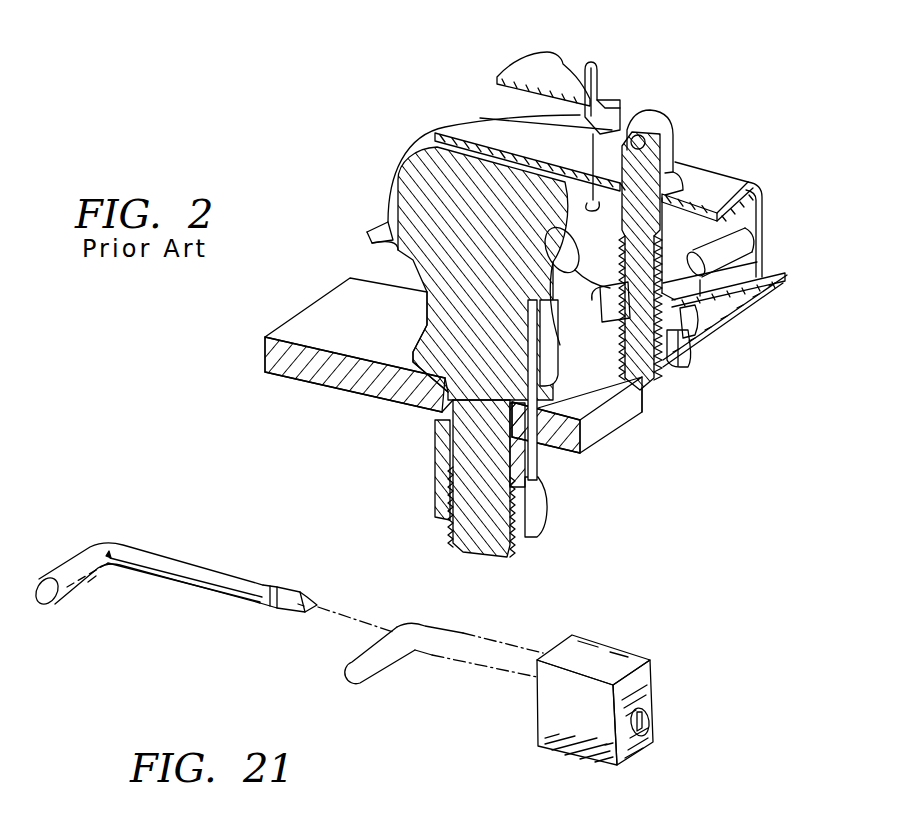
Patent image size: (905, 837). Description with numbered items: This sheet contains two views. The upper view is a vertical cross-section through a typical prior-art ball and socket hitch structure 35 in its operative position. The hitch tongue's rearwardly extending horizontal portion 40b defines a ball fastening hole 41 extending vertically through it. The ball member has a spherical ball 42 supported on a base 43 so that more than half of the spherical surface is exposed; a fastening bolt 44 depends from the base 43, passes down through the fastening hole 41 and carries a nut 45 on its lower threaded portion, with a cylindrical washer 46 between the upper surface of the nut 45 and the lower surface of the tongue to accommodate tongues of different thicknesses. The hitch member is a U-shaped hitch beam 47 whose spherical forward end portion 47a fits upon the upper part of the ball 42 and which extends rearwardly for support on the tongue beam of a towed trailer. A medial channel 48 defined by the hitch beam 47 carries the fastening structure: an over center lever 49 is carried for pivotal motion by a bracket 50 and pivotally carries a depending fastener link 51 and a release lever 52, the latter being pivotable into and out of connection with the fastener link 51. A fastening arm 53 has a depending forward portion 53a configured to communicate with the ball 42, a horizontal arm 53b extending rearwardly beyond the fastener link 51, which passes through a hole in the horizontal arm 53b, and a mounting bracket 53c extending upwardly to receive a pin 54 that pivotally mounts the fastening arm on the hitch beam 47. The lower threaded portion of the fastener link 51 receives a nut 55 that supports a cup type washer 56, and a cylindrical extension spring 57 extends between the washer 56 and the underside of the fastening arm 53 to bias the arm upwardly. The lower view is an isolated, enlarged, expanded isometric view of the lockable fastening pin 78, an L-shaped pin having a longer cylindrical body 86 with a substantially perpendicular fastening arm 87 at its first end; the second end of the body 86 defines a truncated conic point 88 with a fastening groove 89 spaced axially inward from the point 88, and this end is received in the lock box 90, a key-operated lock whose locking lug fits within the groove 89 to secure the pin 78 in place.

In FIG. 2, the ball and socket hitch structure 35 is at (712, 135).
In FIG. 2, the horizontal portion of hitch tongue 40b is at (320, 328).
In FIG. 2, the ball fastening hole 41 is at (418, 407).
In FIG. 2, the spherical ball 42 is at (450, 195).
In FIG. 2, the base 43 is at (425, 322).
In FIG. 2, the fastening bolt 44 is at (337, 0).
In FIG. 2, the nut 45 is at (257, 0).
In FIG. 2, the cylindrical washer 46 is at (538, 467).
In FIG. 2, the U-shaped hitch beam 47 is at (717, 190).
In FIG. 2, the spherical forward end portion 47a is at (450, 125).
In FIG. 2, the medial channel 48 is at (597, 127).
In FIG. 2, the over center lever 49 is at (530, 77).
In FIG. 2, the bracket 50 is at (673, 143).
In FIG. 2, the fastener link 51 is at (653, 380).
In FIG. 2, the release lever 52 is at (589, 62).
In FIG. 2, the fastening arm 53 is at (730, 297).
In FIG. 2, the depending forward portion 53a is at (585, 337).
In FIG. 2, the horizontal arm 53b is at (733, 273).
In FIG. 2, the mounting bracket 53c is at (740, 227).
In FIG. 2, the pin 54 is at (720, 188).
In FIG. 2, the nut 55 is at (680, 370).
In FIG. 2, the cup type washer 56 is at (560, 263).
In FIG. 2, the cylindrical extension spring 57 is at (693, 335).
In FIG. 21, the fastening pin 78 is at (135, 520).
In FIG. 21, the cylindrical body 86 is at (167, 567).
In FIG. 21, the fastening arm 87 is at (90, 580).
In FIG. 21, the truncated conic point 88 is at (312, 610).
In FIG. 21, the fastening groove 89 is at (275, 587).
In FIG. 21, the lock body 90 is at (563, 697).